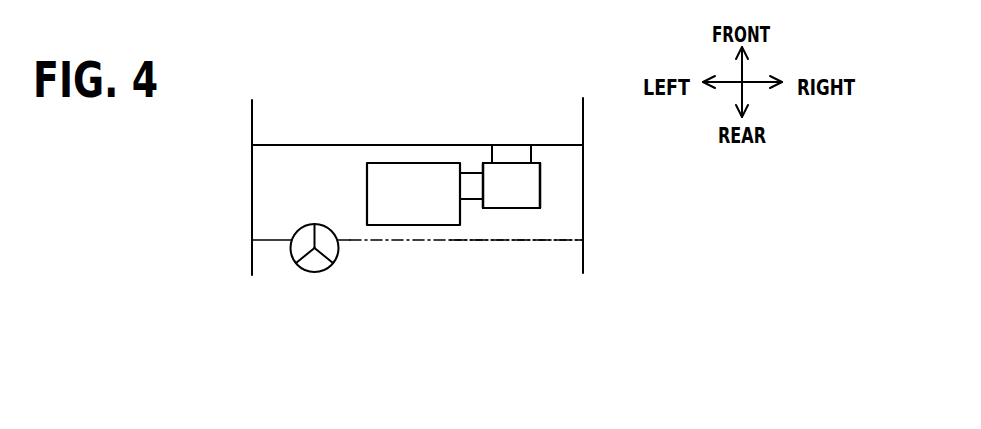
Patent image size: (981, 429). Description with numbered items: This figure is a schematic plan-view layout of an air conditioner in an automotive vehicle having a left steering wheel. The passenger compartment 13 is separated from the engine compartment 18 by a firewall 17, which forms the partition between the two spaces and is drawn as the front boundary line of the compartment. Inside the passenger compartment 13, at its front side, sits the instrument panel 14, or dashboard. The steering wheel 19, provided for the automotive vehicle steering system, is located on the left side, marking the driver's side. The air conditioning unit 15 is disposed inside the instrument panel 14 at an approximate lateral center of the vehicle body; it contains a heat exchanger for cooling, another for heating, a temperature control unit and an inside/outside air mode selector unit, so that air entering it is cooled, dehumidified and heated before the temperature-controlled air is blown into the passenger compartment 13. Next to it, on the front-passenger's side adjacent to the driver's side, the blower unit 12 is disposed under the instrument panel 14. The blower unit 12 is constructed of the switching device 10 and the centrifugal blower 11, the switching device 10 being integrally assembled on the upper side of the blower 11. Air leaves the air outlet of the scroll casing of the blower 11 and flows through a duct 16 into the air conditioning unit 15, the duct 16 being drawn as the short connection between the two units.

The switching device 10 is at (511, 185).
The centrifugal blower 11 is at (511, 185).
The blower unit 12 is at (541, 187).
The passenger compartment 13 is at (493, 253).
The instrument panel 14 is at (537, 240).
The air conditioning unit 15 is at (407, 161).
The duct 16 is at (472, 179).
The firewall 17 is at (273, 145).
The engine compartment 18 is at (365, 127).
The steering wheel 19 is at (314, 273).